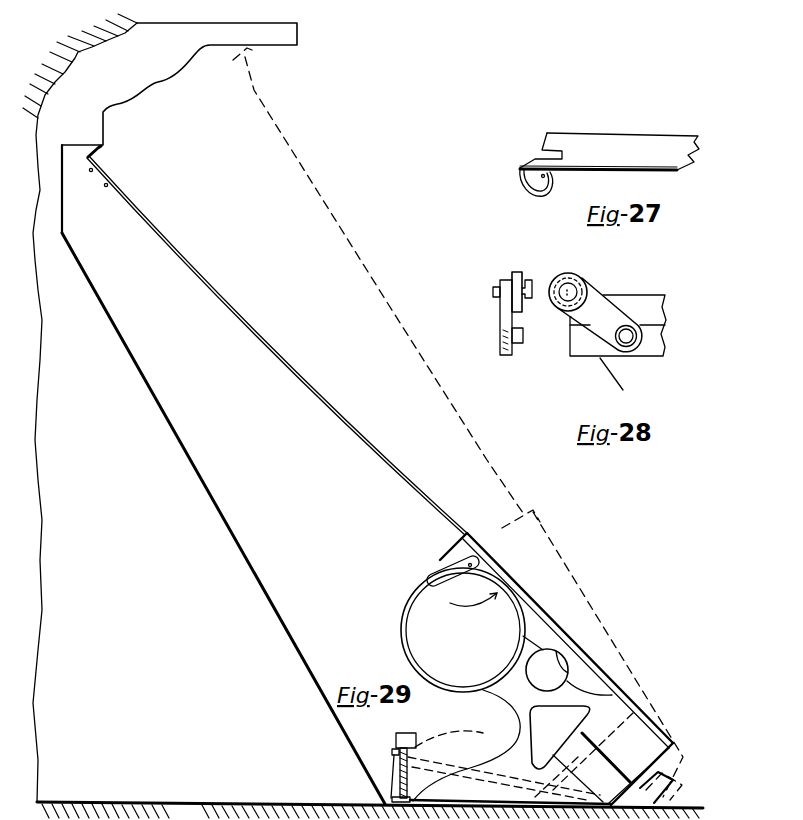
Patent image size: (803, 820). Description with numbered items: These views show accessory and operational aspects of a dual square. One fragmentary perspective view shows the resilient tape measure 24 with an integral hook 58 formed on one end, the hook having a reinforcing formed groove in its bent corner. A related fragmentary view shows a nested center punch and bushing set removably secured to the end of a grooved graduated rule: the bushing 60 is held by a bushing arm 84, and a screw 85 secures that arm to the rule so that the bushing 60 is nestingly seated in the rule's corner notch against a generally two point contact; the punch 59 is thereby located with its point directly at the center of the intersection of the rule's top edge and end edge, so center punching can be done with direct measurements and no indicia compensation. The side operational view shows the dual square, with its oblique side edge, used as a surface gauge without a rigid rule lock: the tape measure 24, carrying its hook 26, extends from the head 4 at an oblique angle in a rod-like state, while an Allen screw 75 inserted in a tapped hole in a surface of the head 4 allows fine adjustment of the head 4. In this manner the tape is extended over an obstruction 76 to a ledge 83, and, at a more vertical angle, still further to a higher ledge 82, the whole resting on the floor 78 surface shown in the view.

In FIG. 29, the head 4 is at (590, 652).
In FIG. 29, the tape measure 24 is at (225, 316).
In FIG. 27, the tape measure 24 is at (608, 132).
In FIG. 29, the hook 26 is at (100, 156).
In FIG. 27, the hook 58 is at (533, 202).
In FIG. 28, the punch 59 is at (587, 273).
In FIG. 28, the bushing 60 is at (537, 275).
In FIG. 29, the Allen screw 75 is at (388, 739).
In FIG. 29, the obstruction 76 is at (230, 597).
In FIG. 29, the floor 78 is at (370, 811).
In FIG. 29, the ledge 82 is at (290, 50).
In FIG. 29, the ledge 83 is at (73, 150).
In FIG. 28, the bushing arm 84 is at (600, 287).
In FIG. 28, the screw 85 is at (634, 326).